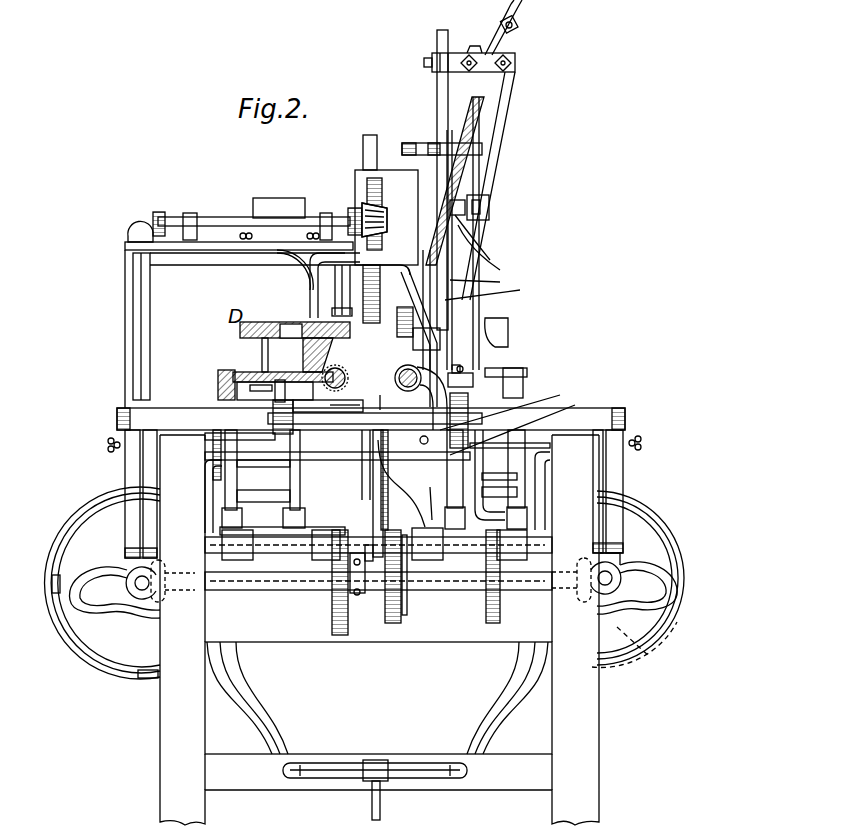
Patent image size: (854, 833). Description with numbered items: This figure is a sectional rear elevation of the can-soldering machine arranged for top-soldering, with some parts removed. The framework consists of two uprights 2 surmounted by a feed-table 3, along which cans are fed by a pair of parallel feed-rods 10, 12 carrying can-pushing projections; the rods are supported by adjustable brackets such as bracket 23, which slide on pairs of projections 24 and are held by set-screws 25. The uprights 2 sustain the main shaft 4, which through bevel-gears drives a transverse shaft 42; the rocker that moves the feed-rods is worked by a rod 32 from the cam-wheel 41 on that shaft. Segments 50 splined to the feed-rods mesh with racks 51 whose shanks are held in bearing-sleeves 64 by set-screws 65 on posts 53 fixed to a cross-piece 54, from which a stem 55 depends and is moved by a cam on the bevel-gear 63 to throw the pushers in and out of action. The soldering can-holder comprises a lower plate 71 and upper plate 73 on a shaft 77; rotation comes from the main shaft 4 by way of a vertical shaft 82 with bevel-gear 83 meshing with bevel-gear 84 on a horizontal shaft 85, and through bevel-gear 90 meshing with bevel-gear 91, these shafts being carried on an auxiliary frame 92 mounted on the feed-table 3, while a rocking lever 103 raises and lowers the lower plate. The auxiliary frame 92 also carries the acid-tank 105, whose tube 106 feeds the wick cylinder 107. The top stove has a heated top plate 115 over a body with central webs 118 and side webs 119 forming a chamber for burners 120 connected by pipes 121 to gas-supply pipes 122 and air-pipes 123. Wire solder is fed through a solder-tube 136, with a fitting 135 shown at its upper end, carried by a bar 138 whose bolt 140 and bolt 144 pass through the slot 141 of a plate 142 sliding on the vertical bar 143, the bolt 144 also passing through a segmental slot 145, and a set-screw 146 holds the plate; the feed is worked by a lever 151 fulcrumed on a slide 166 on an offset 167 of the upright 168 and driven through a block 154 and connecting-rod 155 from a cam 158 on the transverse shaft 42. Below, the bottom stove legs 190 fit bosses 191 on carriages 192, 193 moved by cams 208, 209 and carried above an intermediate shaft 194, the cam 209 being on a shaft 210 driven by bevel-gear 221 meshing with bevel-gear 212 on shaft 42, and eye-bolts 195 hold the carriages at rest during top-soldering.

The uprights 2 is at (170, 721).
The feed-table 3 is at (371, 419).
The main shaft 4 is at (135, 582).
The feed-rod 10 is at (341, 371).
The feed-rod 12 is at (396, 376).
The bracket 23 is at (428, 388).
The projections 24 is at (270, 418).
The set-screws 25 is at (439, 420).
The rod 32 is at (360, 612).
The cam-wheel 41 is at (338, 640).
The transverse shaft 42 is at (285, 610).
The segments 50 is at (331, 395).
The racks 51 is at (345, 400).
The posts 53 is at (278, 393).
The cross-piece 54 is at (337, 454).
The stem 55 is at (455, 432).
The bevel-gear 63 is at (398, 620).
The bearing-sleeves 64 is at (513, 368).
The set-screws 65 is at (462, 372).
The lower plate 71 is at (382, 395).
The upper plate 73 is at (400, 337).
The shaft 77 is at (363, 140).
The vertical shaft 82 is at (133, 312).
The bevel-gear 83 is at (140, 228).
The bevel-gear 84 is at (160, 212).
The horizontal shaft 85 is at (228, 216).
The bevel-gear 90 is at (388, 220).
The bevel-gear 91 is at (350, 210).
The auxiliary frame 92 is at (308, 288).
The rocking lever 103 is at (352, 545).
The acid-tank 105 is at (280, 198).
The tube 106 is at (278, 266).
The cylinder 107 is at (356, 290).
The top plate 115 is at (512, 326).
The central webs 118 is at (290, 322).
The side webs 119 is at (455, 300).
The burners 120 is at (258, 350).
The pipes 121 is at (255, 490).
The gas-supply pipes 122 is at (260, 735).
The air-pipes 123 is at (252, 688).
The fitting 135 is at (516, 14).
The solder-tube 136 is at (470, 165).
The bar 138 is at (500, 118).
The bolt 140 is at (508, 55).
The slot 141 is at (510, 28).
The plate 142 is at (460, 74).
The vertical bar 143 is at (437, 32).
The bolt 144 is at (478, 38).
The segmental slot 145 is at (478, 40).
The set-screw 146 is at (424, 64).
The lever 151 is at (490, 210).
The block 154 is at (490, 200).
The connecting-rod 155 is at (520, 290).
The cam 158 is at (488, 624).
The slide 166 is at (500, 250).
The offset 167 is at (480, 226).
The upright 168 is at (495, 272).
The legs 190 is at (222, 512).
The bosses 191 is at (270, 517).
The carriage 192 is at (353, 493).
The carriage 193 is at (431, 498).
The shaft 194 is at (310, 555).
The eye-bolts 195 is at (135, 462).
The cam 208 is at (98, 658).
The cam 209 is at (688, 630).
The shaft 210 is at (612, 576).
The bevel-gear 212 is at (640, 658).
The bevel-gear 221 is at (620, 558).